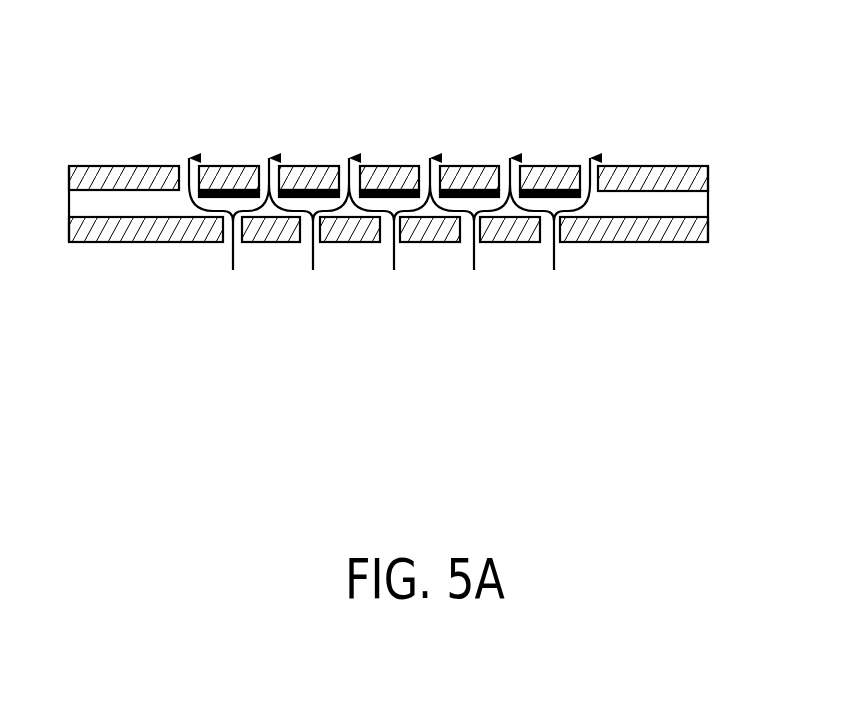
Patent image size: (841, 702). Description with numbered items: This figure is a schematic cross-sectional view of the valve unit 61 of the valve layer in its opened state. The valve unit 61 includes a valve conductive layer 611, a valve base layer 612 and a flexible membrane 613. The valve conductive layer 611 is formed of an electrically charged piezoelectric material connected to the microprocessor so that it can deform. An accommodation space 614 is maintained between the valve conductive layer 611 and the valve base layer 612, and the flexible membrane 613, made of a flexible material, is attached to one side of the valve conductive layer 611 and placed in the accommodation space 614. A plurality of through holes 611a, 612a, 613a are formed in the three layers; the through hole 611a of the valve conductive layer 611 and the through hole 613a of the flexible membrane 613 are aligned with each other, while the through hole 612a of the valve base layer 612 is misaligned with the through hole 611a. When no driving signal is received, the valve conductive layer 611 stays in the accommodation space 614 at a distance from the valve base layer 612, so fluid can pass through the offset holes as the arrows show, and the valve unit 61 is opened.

The valve unit 61 is at (806, 48).
The valve conductive layer 611 is at (658, 178).
The through hole of the valve conductive layer 611a is at (433, 170).
The valve base layer 612 is at (618, 236).
The through hole of the valve base layer 612a is at (400, 230).
The flexible membrane 613 is at (558, 194).
The through hole of the flexible membrane 613a is at (447, 197).
The accommodation space 614 is at (693, 202).